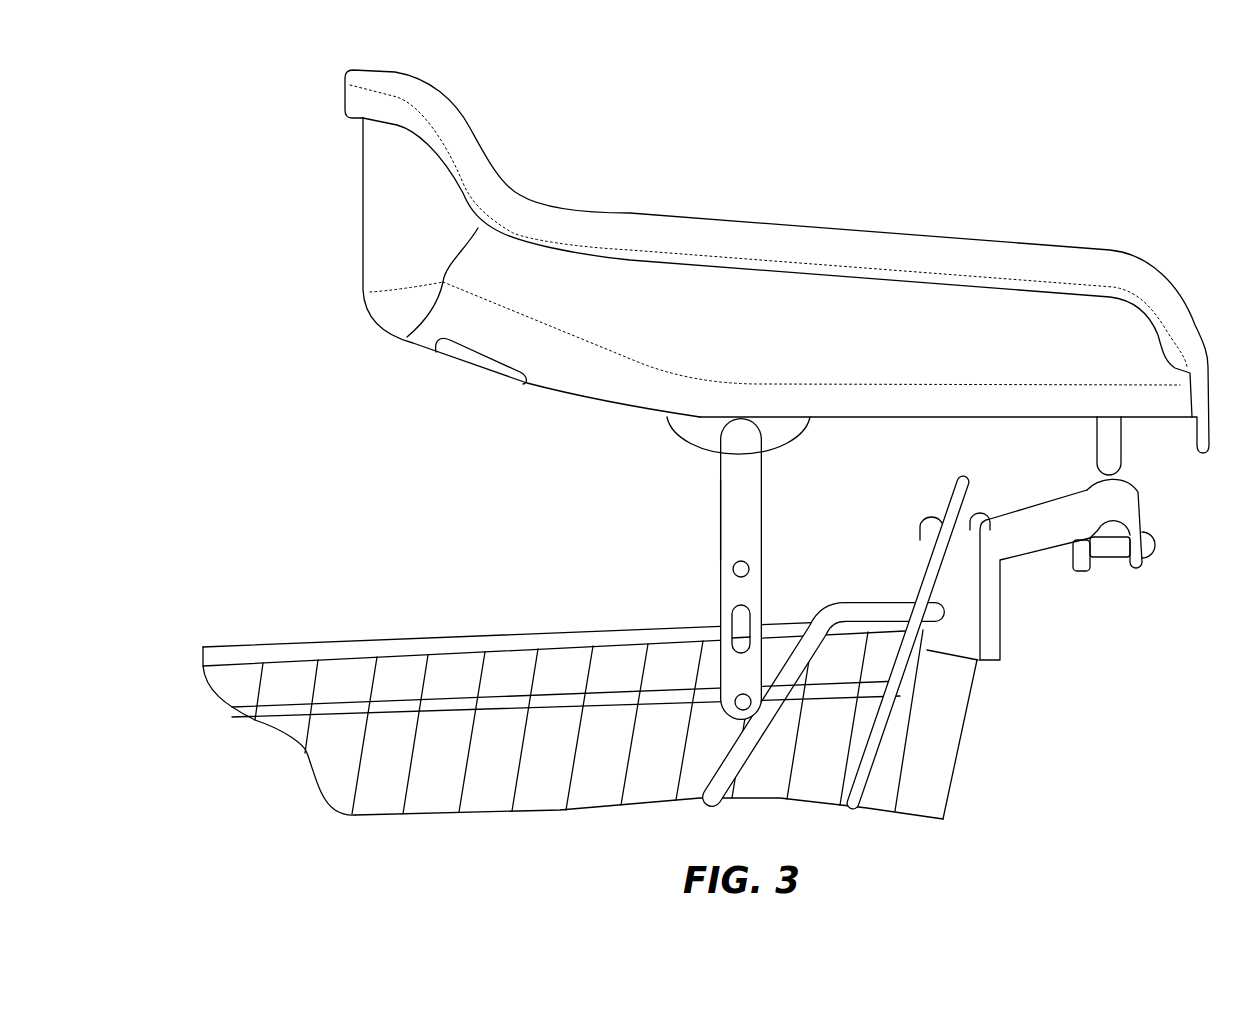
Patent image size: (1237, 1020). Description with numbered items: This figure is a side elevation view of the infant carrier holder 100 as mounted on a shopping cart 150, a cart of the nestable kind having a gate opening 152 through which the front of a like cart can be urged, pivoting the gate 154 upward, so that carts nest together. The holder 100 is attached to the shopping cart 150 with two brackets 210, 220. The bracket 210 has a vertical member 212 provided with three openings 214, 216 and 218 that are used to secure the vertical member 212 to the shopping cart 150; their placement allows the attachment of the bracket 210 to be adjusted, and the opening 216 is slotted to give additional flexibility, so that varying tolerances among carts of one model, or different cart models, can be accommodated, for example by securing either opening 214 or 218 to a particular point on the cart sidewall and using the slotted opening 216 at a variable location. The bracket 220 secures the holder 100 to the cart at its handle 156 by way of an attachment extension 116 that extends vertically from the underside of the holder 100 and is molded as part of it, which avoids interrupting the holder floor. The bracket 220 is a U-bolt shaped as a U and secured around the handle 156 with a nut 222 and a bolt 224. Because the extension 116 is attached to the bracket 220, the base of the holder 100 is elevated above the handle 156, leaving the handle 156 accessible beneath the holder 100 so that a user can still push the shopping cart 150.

The holder 100 is at (960, 170).
The attachment extension 116 is at (1097, 446).
The shopping cart 150 is at (418, 643).
The gate opening 152 is at (985, 767).
The gate 154 is at (880, 713).
The handle 156 is at (1067, 510).
The bracket 210 is at (737, 474).
The vertical member 212 is at (732, 513).
The opening 214 is at (735, 566).
The slotted opening 216 is at (735, 615).
The opening 218 is at (738, 706).
The bracket 220 is at (1140, 502).
The nut 222 is at (1067, 558).
The bolt 224 is at (1117, 548).